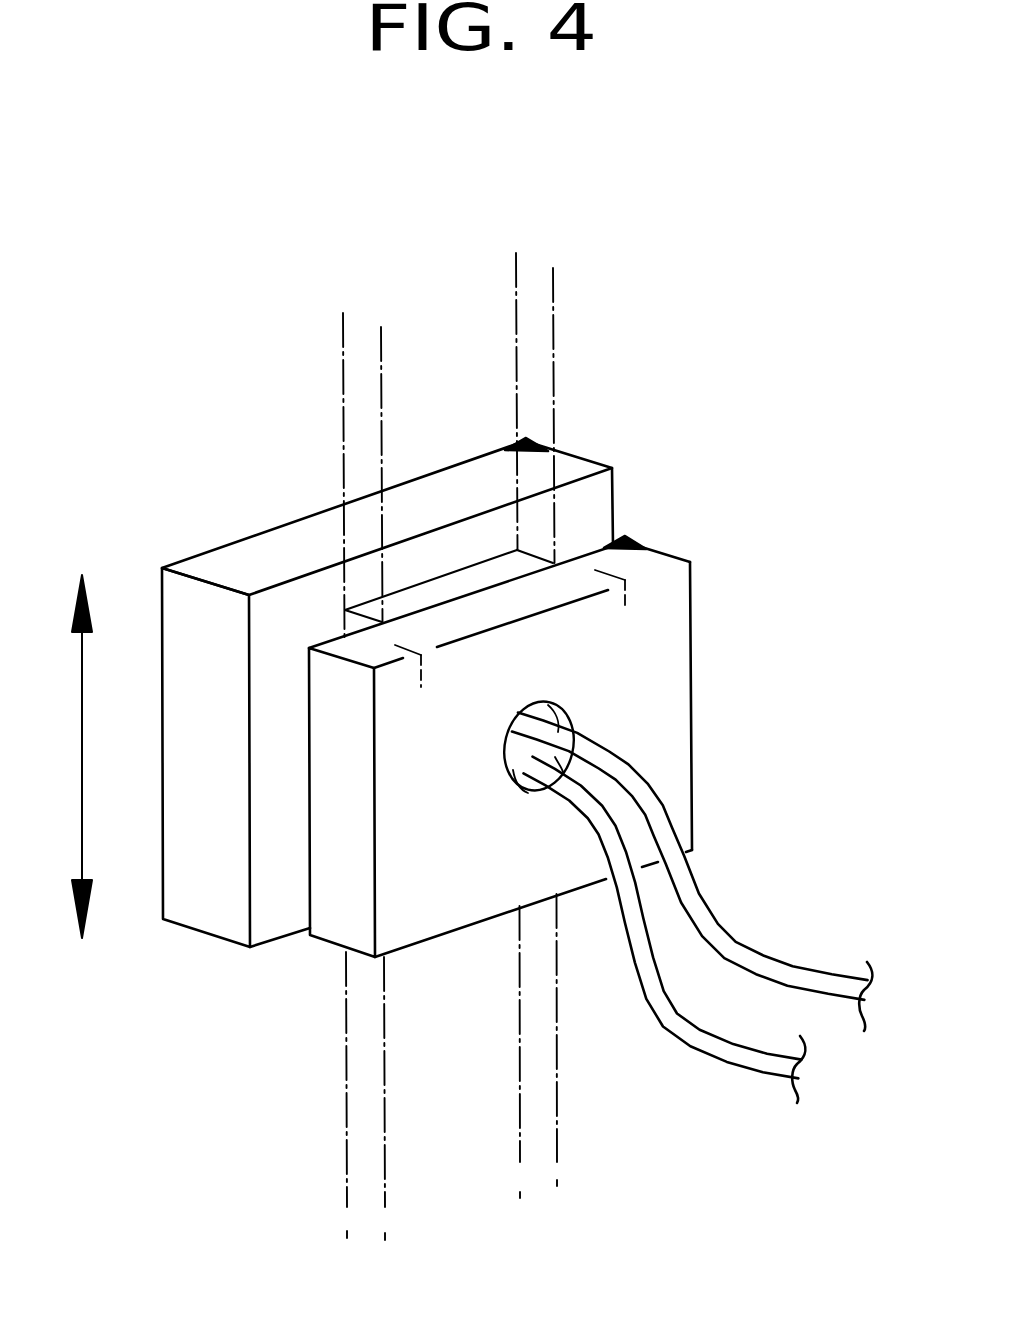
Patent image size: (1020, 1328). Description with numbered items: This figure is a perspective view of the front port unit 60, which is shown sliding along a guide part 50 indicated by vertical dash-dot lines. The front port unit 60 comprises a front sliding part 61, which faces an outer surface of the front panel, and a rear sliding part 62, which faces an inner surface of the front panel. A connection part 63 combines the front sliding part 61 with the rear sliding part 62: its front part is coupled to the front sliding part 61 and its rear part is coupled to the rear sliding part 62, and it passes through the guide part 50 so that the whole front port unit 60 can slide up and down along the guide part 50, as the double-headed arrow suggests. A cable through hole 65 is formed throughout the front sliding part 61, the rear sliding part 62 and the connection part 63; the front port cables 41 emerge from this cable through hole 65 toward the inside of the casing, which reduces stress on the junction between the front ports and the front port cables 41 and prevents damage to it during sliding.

The front port cables 41 is at (670, 1000).
The guide part 50 is at (530, 363).
The front port unit 60 is at (523, 696).
The front sliding part 61 is at (580, 470).
The rear sliding part 62 is at (673, 640).
The connection part 63 is at (508, 568).
The cable through hole 65 is at (648, 740).